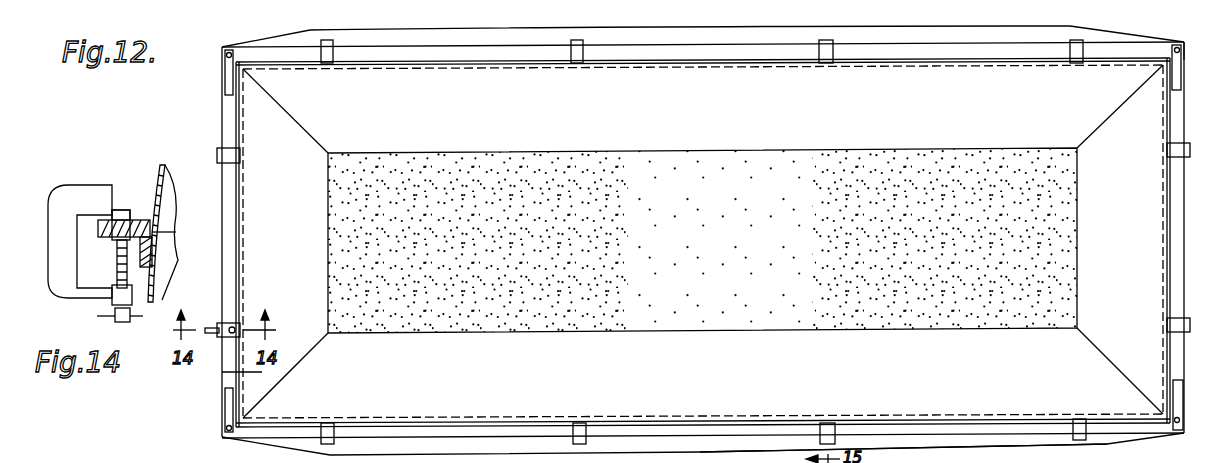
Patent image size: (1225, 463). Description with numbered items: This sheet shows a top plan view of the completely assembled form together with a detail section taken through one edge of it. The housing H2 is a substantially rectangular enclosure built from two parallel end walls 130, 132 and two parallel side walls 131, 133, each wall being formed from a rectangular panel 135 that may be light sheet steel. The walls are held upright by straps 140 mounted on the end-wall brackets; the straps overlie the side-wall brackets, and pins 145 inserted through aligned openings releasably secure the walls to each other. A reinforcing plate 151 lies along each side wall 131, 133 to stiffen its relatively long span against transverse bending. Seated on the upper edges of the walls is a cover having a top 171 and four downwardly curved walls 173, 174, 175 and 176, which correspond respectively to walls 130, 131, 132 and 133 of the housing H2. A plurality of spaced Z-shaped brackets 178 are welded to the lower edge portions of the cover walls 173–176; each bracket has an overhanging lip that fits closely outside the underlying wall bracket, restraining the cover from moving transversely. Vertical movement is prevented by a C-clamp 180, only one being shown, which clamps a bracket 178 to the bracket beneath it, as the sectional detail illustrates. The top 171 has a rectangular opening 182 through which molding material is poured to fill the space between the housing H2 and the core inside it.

In FIG. 12, the housing H2 is at (218, 85).
In FIG. 12, the end wall 130 is at (225, 110).
In FIG. 14, the end wall 130 is at (158, 266).
In FIG. 12, the side wall 131 is at (525, 52).
In FIG. 12, the end wall 132 is at (1181, 262).
In FIG. 12, the side wall 133 is at (765, 397).
In FIG. 14, the panel 135 is at (157, 288).
In FIG. 12, the strap 140 is at (1180, 78).
In FIG. 12, the pin 145 is at (1200, 42).
In FIG. 12, the reinforcing plate 151 is at (975, 405).
In FIG. 12, the top 171 is at (560, 128).
In FIG. 12, the downwardly curved wall 173 is at (262, 372).
In FIG. 14, the downwardly curved wall 173 is at (150, 165).
In FIG. 12, the downwardly curved wall 174 is at (777, 50).
In FIG. 12, the downwardly curved wall 175 is at (1137, 193).
In FIG. 12, the downwardly curved wall 176 is at (1130, 402).
In FIG. 12, the Z-shaped bracket 178 is at (333, 52).
In FIG. 14, the Z-shaped bracket 178 is at (112, 210).
In FIG. 12, the C-clamp 180 is at (217, 328).
In FIG. 14, the C-clamp 180 is at (60, 200).
In FIG. 12, the opening 182 is at (698, 160).